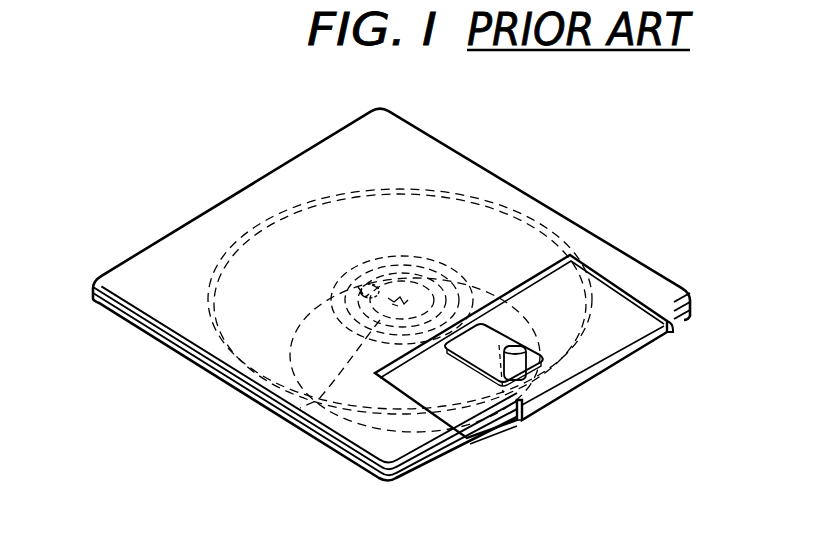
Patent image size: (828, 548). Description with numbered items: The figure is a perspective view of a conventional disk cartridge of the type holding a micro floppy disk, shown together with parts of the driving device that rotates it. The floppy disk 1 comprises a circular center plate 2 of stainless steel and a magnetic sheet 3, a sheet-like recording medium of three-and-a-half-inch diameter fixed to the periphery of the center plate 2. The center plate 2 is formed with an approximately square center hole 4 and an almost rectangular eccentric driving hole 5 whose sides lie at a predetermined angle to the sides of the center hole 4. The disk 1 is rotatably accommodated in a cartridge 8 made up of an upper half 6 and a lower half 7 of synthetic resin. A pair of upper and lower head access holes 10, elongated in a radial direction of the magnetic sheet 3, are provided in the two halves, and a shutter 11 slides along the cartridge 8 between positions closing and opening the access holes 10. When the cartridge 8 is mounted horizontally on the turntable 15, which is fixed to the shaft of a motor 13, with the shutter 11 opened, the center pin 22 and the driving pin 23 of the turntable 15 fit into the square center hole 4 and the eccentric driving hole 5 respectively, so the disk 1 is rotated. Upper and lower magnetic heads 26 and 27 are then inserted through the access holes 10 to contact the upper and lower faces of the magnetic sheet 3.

The floppy disk 1 is at (290, 243).
The circular center plate 2 is at (437, 293).
The magnetic sheet 3 is at (445, 195).
The center hole 4 is at (345, 321).
The eccentric driving hole 5 is at (356, 288).
The upper half 6 is at (137, 270).
The lower half 7 is at (140, 330).
The cartridge 8 is at (180, 255).
The head access holes 10 is at (494, 338).
The shutter 11 is at (605, 333).
The motor 13 is at (450, 453).
The turntable 15 is at (312, 429).
The center pin 22 is at (440, 278).
The driving pin 23 is at (362, 288).
The upper magnetic head 26 is at (530, 362).
The lower magnetic head 27 is at (512, 400).